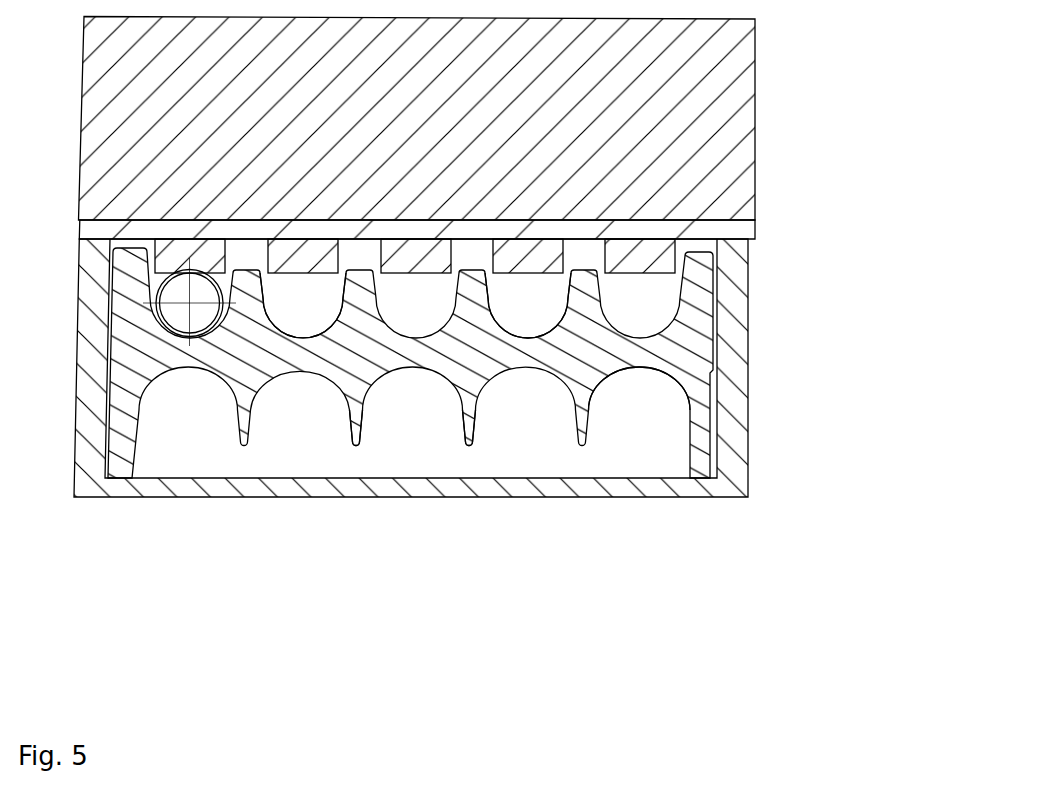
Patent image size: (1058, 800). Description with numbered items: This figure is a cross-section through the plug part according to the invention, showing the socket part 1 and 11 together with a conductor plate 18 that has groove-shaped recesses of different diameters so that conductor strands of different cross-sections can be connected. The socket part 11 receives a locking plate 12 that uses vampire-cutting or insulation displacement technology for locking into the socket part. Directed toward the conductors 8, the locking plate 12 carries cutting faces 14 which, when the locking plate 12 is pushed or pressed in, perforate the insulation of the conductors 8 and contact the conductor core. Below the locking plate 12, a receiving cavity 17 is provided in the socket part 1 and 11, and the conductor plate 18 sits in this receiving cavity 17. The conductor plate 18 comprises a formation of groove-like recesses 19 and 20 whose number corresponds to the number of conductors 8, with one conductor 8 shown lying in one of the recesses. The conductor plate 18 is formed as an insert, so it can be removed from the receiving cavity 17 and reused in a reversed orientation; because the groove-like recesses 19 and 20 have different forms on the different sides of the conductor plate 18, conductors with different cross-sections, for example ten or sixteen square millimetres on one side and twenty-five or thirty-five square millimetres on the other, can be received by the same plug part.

The socket part 1 is at (485, 145).
The socket part 11 is at (417, 145).
The locking plate 12 is at (455, 237).
The cutting faces 14 is at (469, 440).
The receiving cavity 17 is at (449, 437).
The conductor plate 18 is at (596, 490).
The groove-like recess 19 is at (349, 452).
The groove-like recess 20 is at (348, 516).
The conductor 8 is at (134, 445).